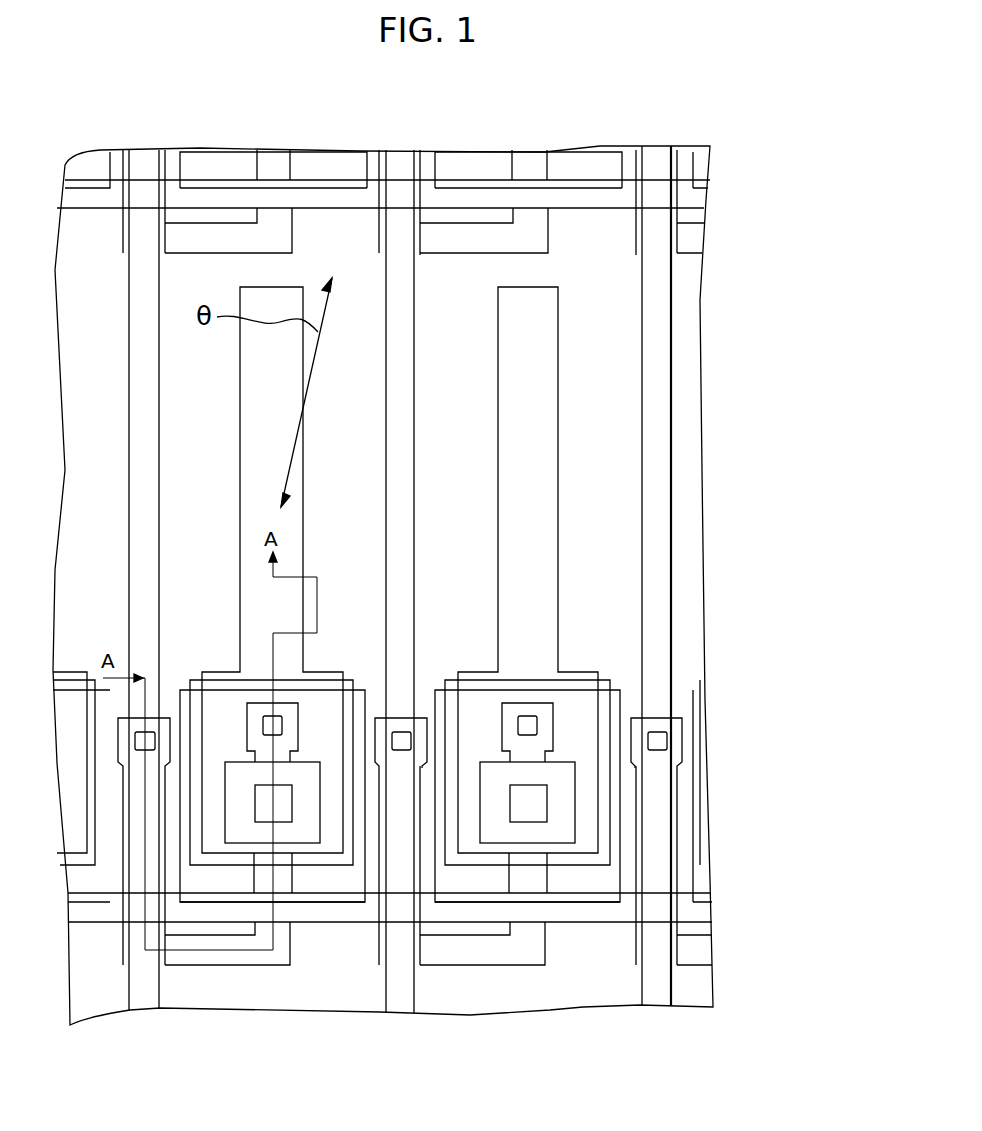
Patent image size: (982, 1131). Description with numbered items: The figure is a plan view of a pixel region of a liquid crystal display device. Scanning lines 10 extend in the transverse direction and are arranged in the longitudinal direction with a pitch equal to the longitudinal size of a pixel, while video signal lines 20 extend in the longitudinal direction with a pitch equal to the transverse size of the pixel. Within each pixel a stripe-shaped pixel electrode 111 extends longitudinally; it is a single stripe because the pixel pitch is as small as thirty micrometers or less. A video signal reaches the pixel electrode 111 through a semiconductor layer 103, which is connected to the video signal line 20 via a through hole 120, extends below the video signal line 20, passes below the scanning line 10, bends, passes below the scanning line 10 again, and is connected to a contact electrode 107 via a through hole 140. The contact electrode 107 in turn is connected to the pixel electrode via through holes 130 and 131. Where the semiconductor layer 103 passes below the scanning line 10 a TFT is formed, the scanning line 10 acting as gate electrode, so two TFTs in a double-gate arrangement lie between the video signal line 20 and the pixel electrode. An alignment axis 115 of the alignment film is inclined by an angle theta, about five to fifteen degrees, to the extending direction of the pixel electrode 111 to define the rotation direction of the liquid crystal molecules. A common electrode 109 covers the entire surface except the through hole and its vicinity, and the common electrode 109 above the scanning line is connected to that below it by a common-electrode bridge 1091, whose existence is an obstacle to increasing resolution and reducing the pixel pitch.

The scanning line 10 is at (578, 912).
The video signal line 20 is at (657, 402).
The semiconductor layer 103 is at (475, 957).
The contact electrode 107 is at (603, 723).
The common electrode 109 is at (613, 352).
The pixel electrode 111 is at (530, 505).
The alignment axis 115 is at (358, 368).
The through hole 120 is at (398, 730).
The through hole 130 is at (560, 777).
The through hole 131 is at (530, 807).
The through hole 140 is at (527, 723).
The common-electrode bridge 1091 is at (684, 852).